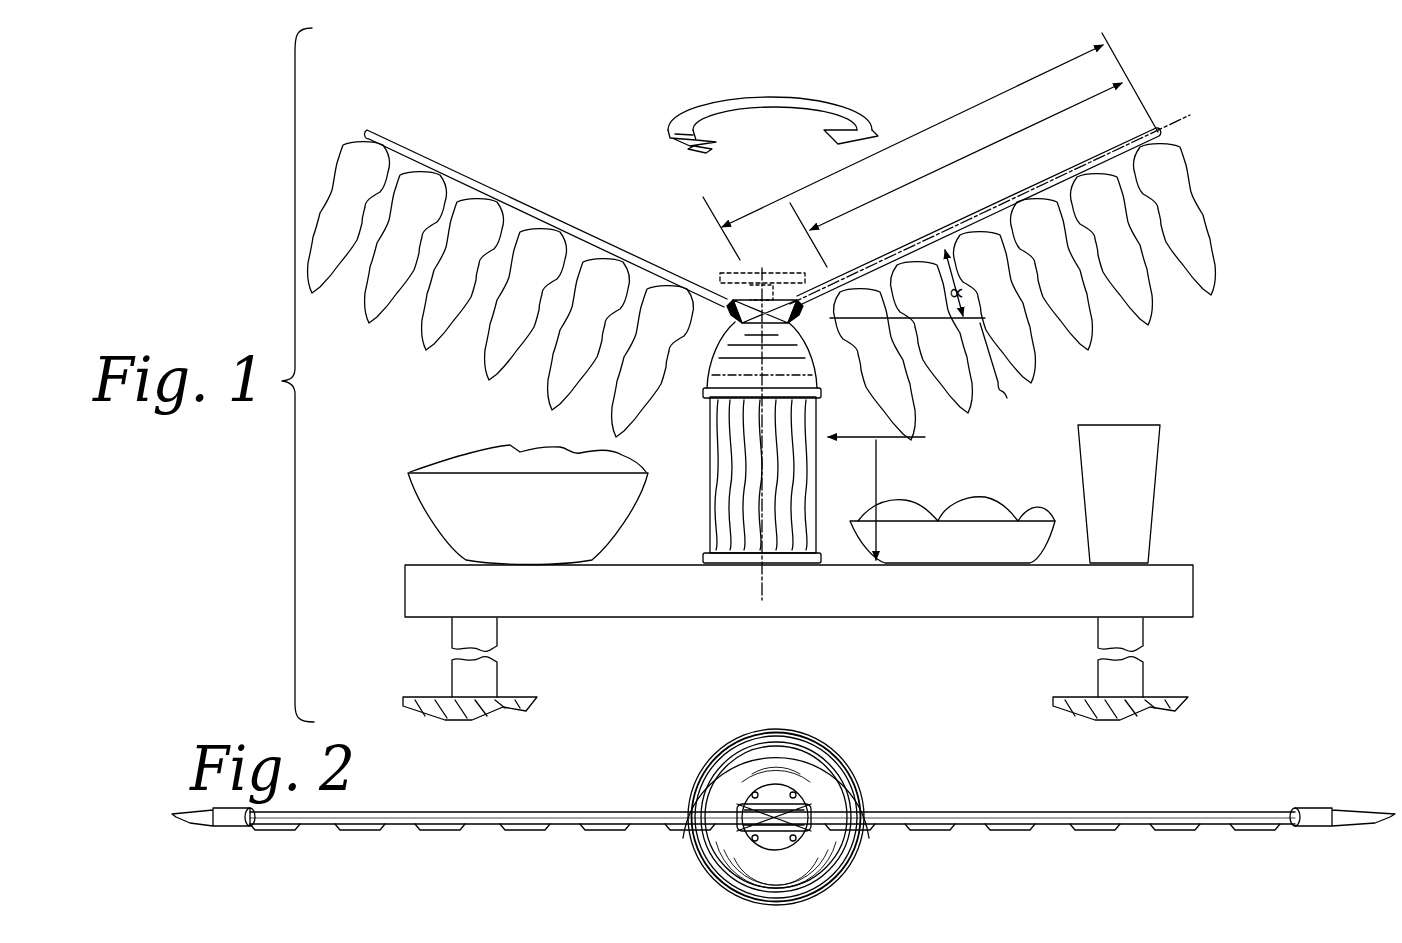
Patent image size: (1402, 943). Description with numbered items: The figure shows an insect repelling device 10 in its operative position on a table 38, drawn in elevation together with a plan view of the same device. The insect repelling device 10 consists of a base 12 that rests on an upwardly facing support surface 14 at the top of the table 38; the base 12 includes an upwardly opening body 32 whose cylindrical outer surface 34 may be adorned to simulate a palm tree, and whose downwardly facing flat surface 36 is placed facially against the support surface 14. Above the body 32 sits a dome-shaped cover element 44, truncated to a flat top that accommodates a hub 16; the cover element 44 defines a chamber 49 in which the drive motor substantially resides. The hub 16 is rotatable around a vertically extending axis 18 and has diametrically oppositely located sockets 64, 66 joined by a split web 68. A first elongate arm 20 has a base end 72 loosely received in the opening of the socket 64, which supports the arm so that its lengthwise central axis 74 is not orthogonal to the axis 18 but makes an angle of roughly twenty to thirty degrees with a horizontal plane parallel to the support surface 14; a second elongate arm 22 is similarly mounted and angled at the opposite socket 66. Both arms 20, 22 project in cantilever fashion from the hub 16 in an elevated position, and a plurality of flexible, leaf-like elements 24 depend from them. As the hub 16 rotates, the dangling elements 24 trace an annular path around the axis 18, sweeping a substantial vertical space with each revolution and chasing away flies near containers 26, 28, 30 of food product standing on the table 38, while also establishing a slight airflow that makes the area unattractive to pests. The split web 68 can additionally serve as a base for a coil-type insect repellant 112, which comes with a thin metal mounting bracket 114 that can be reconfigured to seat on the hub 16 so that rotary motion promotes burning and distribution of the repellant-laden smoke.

In FIG. 1, the insect repelling device 10 is at (735, 170).
In FIG. 2, the insect repelling device 10 is at (915, 756).
In FIG. 1, the base 12 is at (700, 532).
In FIG. 2, the base 12 is at (856, 764).
In FIG. 1, the upwardly facing support surface 14 is at (566, 636).
In FIG. 1, the hub 16 is at (735, 442).
In FIG. 2, the hub 16 is at (769, 782).
In FIG. 1, the vertically extending axis 18 is at (756, 284).
In FIG. 1, the first elongate arm 20 is at (1030, 186).
In FIG. 2, the first elongate arm 20 is at (1060, 817).
In FIG. 1, the second elongate arm 22 is at (552, 214).
In FIG. 2, the second elongate arm 22 is at (546, 790).
In FIG. 1, the elements 24 is at (762, 291).
In FIG. 2, the elements 24 is at (237, 830).
In FIG. 1, the container 26 is at (440, 505).
In FIG. 1, the container 28 is at (995, 535).
In FIG. 1, the container 30 is at (1148, 480).
In FIG. 1, the upwardly opening body 32 is at (955, 470).
In FIG. 1, the cylindrical outer surface 34 is at (710, 468).
In FIG. 1, the downwardly facing flat surface 36 is at (785, 563).
In FIG. 1, the table 38 is at (1172, 585).
In FIG. 1, the dome-shaped cover element 44 is at (800, 348).
In FIG. 1, the chamber 49 is at (800, 366).
In FIG. 1, the socket 64 is at (878, 245).
In FIG. 2, the socket 64 is at (807, 790).
In FIG. 1, the socket 66 is at (735, 298).
In FIG. 2, the socket 66 is at (743, 803).
In FIG. 1, the split web 68 is at (775, 160).
In FIG. 2, the split web 68 is at (745, 832).
In FIG. 1, the base end 72 is at (902, 82).
In FIG. 2, the base end 72 is at (826, 822).
In FIG. 1, the lengthwise central axis 74 is at (1118, 150).
In FIG. 1, the coil-type insect repellant 112 is at (808, 288).
In FIG. 1, the mounting bracket 114 is at (748, 296).